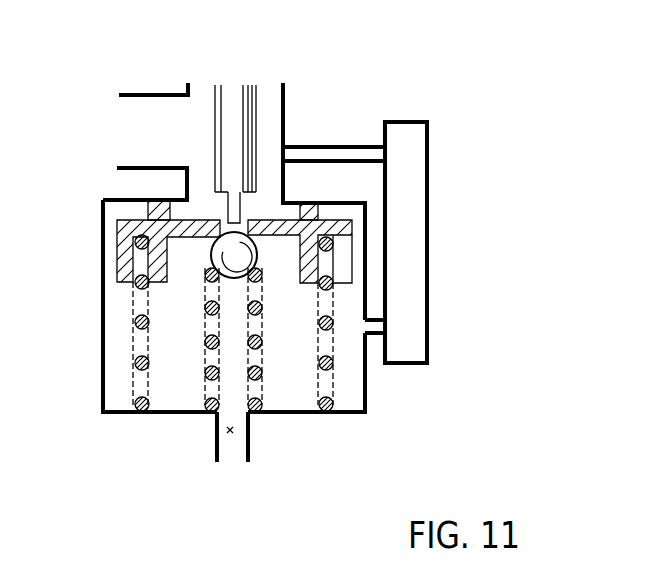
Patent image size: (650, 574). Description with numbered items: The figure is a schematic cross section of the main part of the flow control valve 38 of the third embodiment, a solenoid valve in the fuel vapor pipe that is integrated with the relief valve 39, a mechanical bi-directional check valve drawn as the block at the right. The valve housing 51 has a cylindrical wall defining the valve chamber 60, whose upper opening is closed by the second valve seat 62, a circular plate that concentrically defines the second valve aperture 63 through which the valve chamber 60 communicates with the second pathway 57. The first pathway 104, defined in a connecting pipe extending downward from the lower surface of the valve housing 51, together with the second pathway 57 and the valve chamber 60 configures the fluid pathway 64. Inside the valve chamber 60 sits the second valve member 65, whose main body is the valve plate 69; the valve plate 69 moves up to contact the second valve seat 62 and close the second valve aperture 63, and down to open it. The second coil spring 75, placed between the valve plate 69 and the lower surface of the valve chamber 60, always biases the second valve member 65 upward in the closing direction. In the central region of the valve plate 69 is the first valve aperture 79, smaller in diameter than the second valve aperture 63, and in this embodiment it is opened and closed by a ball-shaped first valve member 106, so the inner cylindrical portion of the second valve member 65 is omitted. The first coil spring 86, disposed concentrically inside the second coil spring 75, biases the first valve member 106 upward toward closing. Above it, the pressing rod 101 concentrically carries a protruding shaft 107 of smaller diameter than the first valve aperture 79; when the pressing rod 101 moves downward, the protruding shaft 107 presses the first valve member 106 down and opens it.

The flow control valve 38 is at (381, 66).
The relief valve 39 is at (432, 151).
The valve housing 51 is at (368, 389).
The second pathway 57 is at (137, 105).
The valve chamber 60 is at (115, 377).
The second valve seat 62 is at (143, 198).
The second valve aperture 63 is at (195, 187).
The fluid pathway 64 is at (222, 430).
The second valve member 65 is at (113, 247).
The valve plate 69 is at (283, 230).
The second coil spring 75 is at (128, 322).
The first valve aperture 79 is at (245, 220).
The first coil spring 86 is at (205, 373).
The pressing rod 101 is at (243, 107).
The first pathway 104 is at (237, 448).
The first valve member 106 is at (232, 258).
The protruding shaft 107 is at (226, 198).